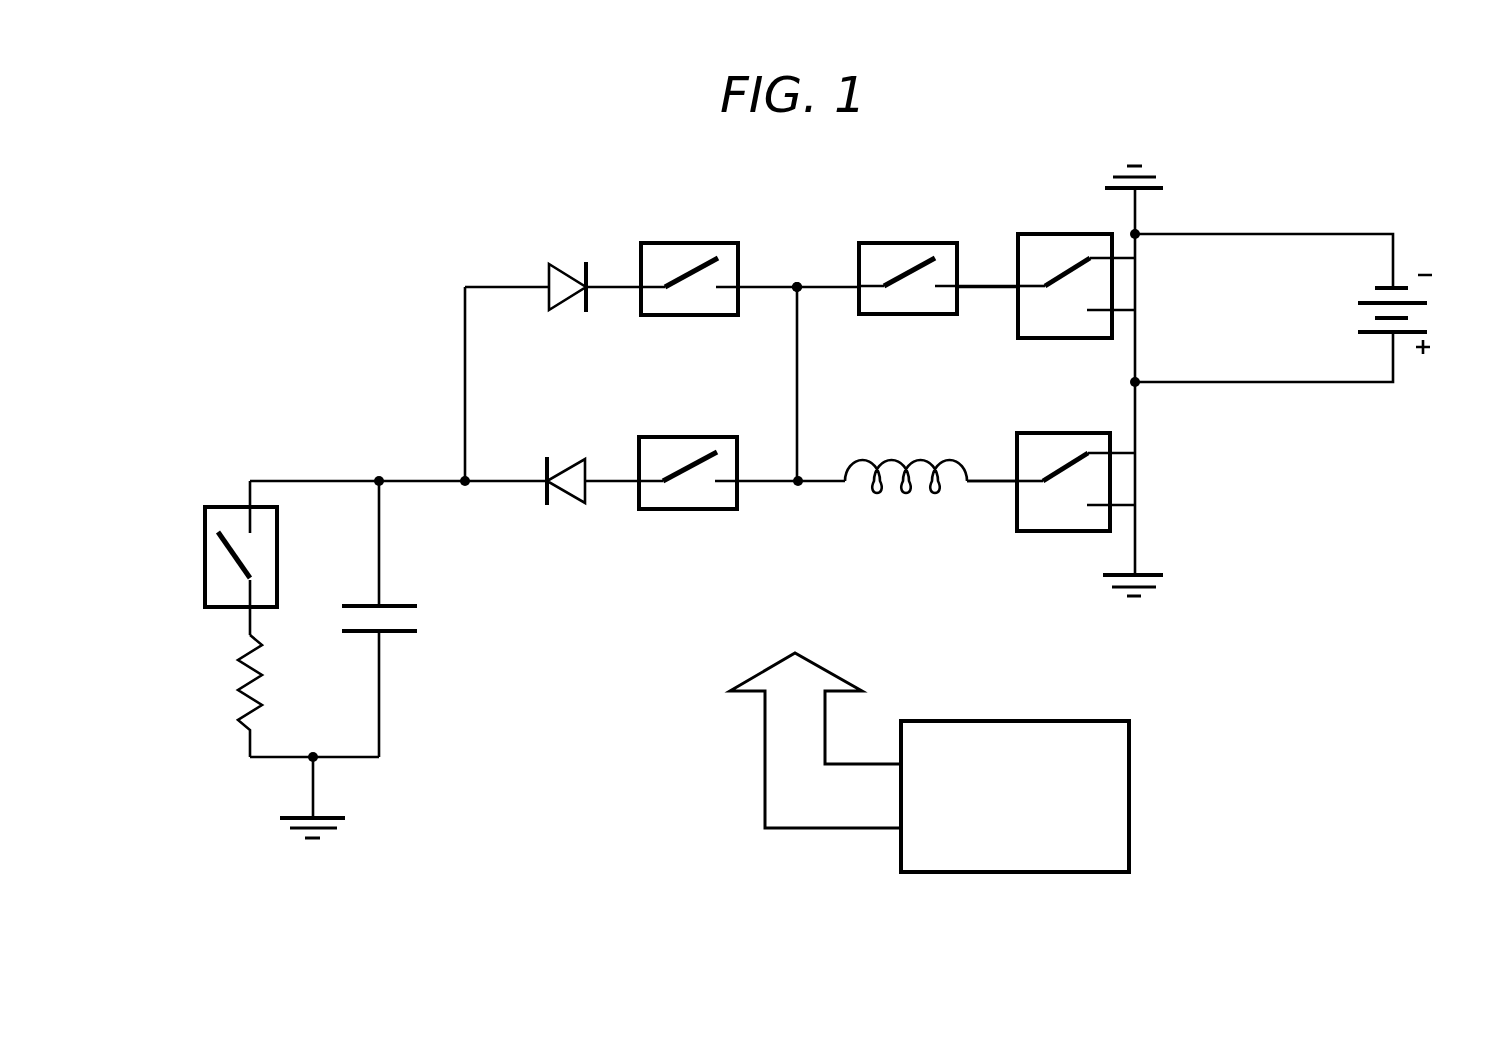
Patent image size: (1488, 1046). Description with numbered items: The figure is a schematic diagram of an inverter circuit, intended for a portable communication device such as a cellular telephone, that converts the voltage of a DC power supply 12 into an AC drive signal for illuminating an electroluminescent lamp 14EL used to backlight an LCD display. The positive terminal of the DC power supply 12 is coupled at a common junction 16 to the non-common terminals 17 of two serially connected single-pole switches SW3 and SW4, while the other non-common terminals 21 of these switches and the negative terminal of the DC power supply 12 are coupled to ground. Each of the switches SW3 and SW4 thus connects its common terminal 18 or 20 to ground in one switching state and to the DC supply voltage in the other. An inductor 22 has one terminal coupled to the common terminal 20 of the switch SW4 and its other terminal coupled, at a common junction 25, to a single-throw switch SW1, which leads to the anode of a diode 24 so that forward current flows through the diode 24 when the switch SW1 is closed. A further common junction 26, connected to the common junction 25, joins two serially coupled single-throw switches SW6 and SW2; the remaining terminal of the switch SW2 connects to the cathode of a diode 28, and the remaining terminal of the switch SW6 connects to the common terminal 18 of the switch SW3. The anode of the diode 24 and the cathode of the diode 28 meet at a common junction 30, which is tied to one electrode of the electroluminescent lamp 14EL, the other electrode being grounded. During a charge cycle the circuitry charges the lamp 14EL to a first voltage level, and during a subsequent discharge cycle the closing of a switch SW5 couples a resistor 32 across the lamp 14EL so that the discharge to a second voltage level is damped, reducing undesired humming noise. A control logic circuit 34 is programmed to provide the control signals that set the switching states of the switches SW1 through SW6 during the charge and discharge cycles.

The DC power supply 12 is at (1425, 318).
The electroluminescent lamp 14EL is at (420, 620).
The common junction 16 is at (1133, 382).
The non-common terminal 17 is at (1122, 311).
The common terminal 18 is at (990, 282).
The common terminal 20 is at (990, 485).
The non-common terminal 21 is at (1137, 260).
The inductor 22 is at (905, 498).
The diode 24 is at (567, 506).
The common junction 25 is at (798, 488).
The common junction 26 is at (797, 280).
The diode 28 is at (563, 262).
The common junction 30 is at (465, 488).
The resistor 32 is at (232, 688).
The control logic circuit 34 is at (1131, 797).
The single-throw switch SW1 is at (686, 511).
The single-throw switch SW2 is at (697, 241).
The single-pole switch SW3 is at (1063, 232).
The single-pole switch SW4 is at (1060, 533).
The switch SW5 is at (205, 551).
The single-throw switch SW6 is at (908, 241).